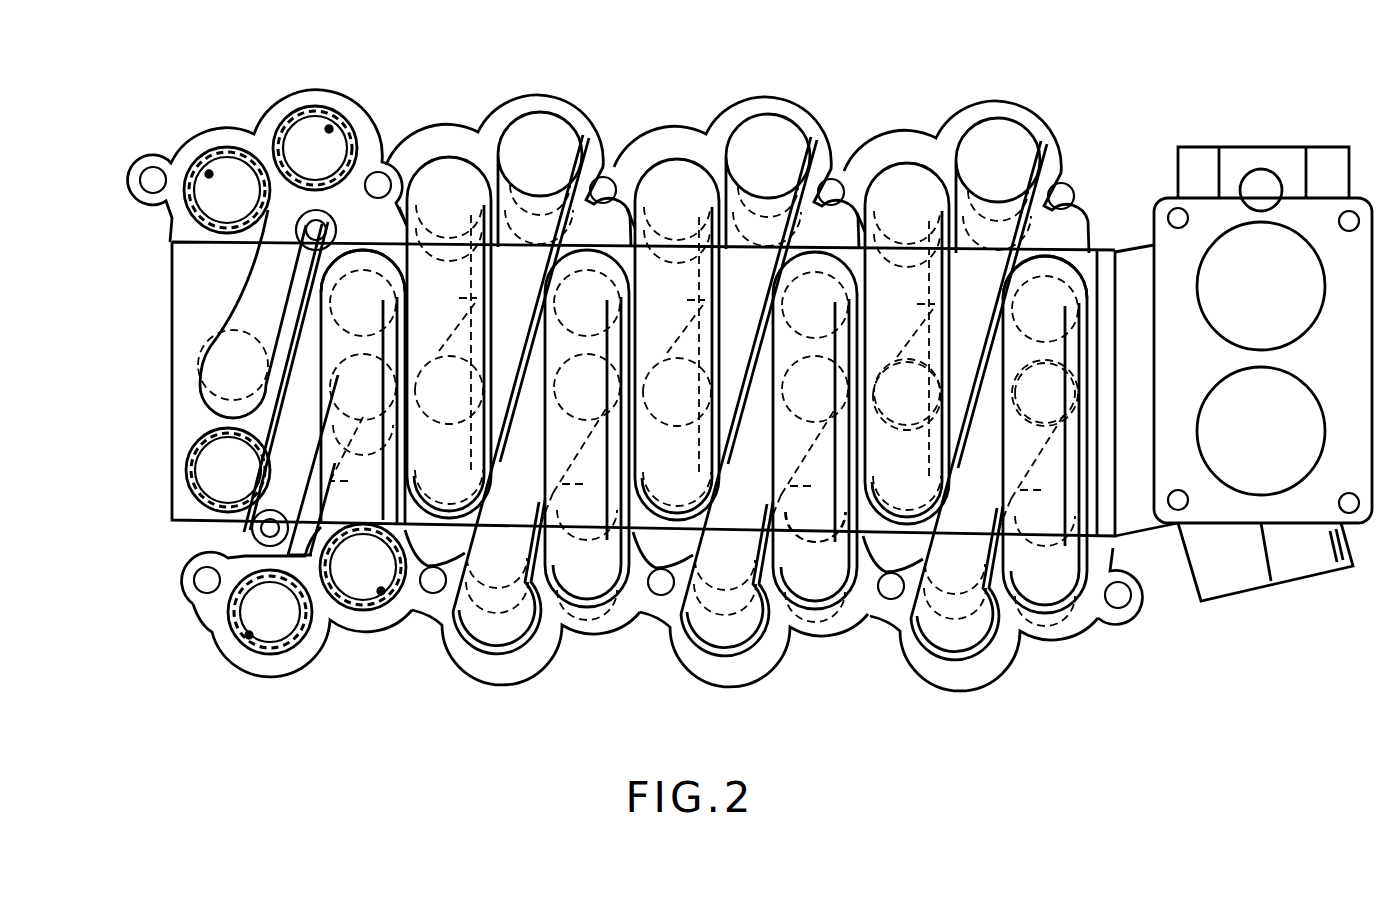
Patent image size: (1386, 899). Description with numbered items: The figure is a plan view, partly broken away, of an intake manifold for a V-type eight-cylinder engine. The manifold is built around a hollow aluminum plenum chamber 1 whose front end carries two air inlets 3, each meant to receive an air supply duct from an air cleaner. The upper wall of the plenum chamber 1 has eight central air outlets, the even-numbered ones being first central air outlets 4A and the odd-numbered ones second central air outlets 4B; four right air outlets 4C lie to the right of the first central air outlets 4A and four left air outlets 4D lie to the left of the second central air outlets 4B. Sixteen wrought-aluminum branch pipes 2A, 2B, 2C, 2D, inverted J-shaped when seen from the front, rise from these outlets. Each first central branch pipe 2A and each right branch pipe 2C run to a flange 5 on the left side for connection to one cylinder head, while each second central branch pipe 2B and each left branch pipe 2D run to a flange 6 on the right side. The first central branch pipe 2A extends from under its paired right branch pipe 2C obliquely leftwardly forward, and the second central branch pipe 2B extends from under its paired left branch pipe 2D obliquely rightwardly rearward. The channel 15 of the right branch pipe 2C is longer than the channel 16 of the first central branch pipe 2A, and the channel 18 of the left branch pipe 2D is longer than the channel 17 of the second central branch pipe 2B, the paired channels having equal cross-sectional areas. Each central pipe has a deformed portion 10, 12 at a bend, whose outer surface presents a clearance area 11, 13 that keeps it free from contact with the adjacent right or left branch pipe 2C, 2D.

The plenum chamber 1 is at (160, 361).
The first central branch pipe 2A is at (312, 112).
The second central branch pipe 2B is at (283, 655).
The right branch pipe 2C is at (217, 150).
The left branch pipe 2D is at (375, 612).
The air inlet 3 is at (1283, 372).
The first central air outlet 4A is at (559, 317).
The second central air outlet 4B is at (1115, 392).
The right air outlet 4C is at (186, 467).
The left air outlet 4D is at (385, 308).
The flange 5 is at (1057, 137).
The flange 6 is at (1082, 628).
The deformed portion 10 is at (266, 305).
The clearance area 11 is at (255, 280).
The deformed portion 12 is at (274, 480).
The clearance area 13 is at (698, 469).
The channel 15 is at (207, 172).
The channel 16 is at (330, 127).
The channel 17 is at (248, 637).
The channel 18 is at (381, 593).